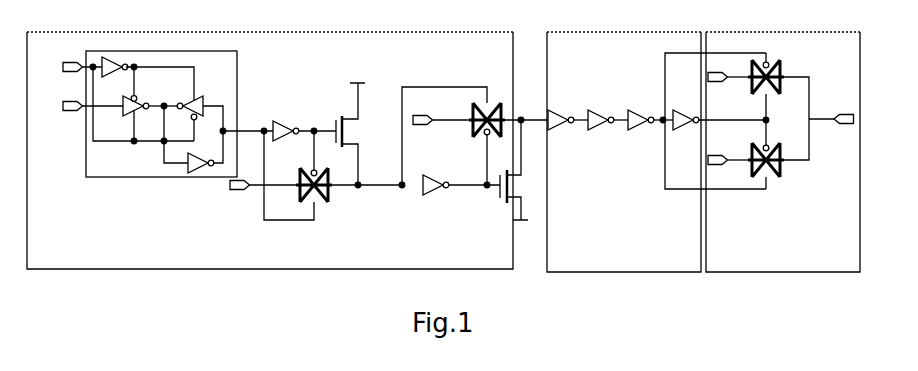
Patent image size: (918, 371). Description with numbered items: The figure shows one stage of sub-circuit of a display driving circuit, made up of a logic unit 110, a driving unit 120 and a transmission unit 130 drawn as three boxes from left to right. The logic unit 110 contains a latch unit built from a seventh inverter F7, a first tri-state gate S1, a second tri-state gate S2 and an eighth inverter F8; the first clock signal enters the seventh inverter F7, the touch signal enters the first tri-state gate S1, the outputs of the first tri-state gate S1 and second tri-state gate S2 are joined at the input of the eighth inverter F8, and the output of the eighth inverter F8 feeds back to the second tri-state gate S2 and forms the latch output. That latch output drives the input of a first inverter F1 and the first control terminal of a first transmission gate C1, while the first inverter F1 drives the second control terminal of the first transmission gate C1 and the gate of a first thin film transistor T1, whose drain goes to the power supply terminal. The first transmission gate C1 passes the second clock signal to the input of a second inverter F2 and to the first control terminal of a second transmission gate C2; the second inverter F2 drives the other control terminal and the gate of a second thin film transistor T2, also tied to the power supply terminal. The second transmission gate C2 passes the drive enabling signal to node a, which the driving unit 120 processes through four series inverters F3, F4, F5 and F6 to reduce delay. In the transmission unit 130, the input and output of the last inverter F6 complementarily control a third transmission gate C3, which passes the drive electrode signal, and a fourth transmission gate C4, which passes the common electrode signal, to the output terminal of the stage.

The logic unit 110 is at (252, 32).
The driving unit 120 is at (580, 32).
The transmission unit 130 is at (729, 32).
The first inverter F1 is at (286, 123).
The second inverter F2 is at (436, 194).
The first inverter of the inverter group F3 is at (561, 128).
The inverter of the inverter group F4 is at (601, 128).
The inverter of the inverter group F5 is at (641, 128).
The last inverter of the inverter group F6 is at (686, 128).
The seventh inverter F7 is at (112, 75).
The eighth inverter F8 is at (201, 156).
The first tri-state gate S1 is at (139, 109).
The second tri-state gate S2 is at (186, 99).
The first thin film transistor T1 is at (354, 134).
The second thin film transistor T2 is at (506, 170).
The first transmission gate C1 is at (301, 179).
The second transmission gate C2 is at (488, 135).
The third transmission gate C3 is at (776, 75).
The fourth transmission gate C4 is at (776, 165).